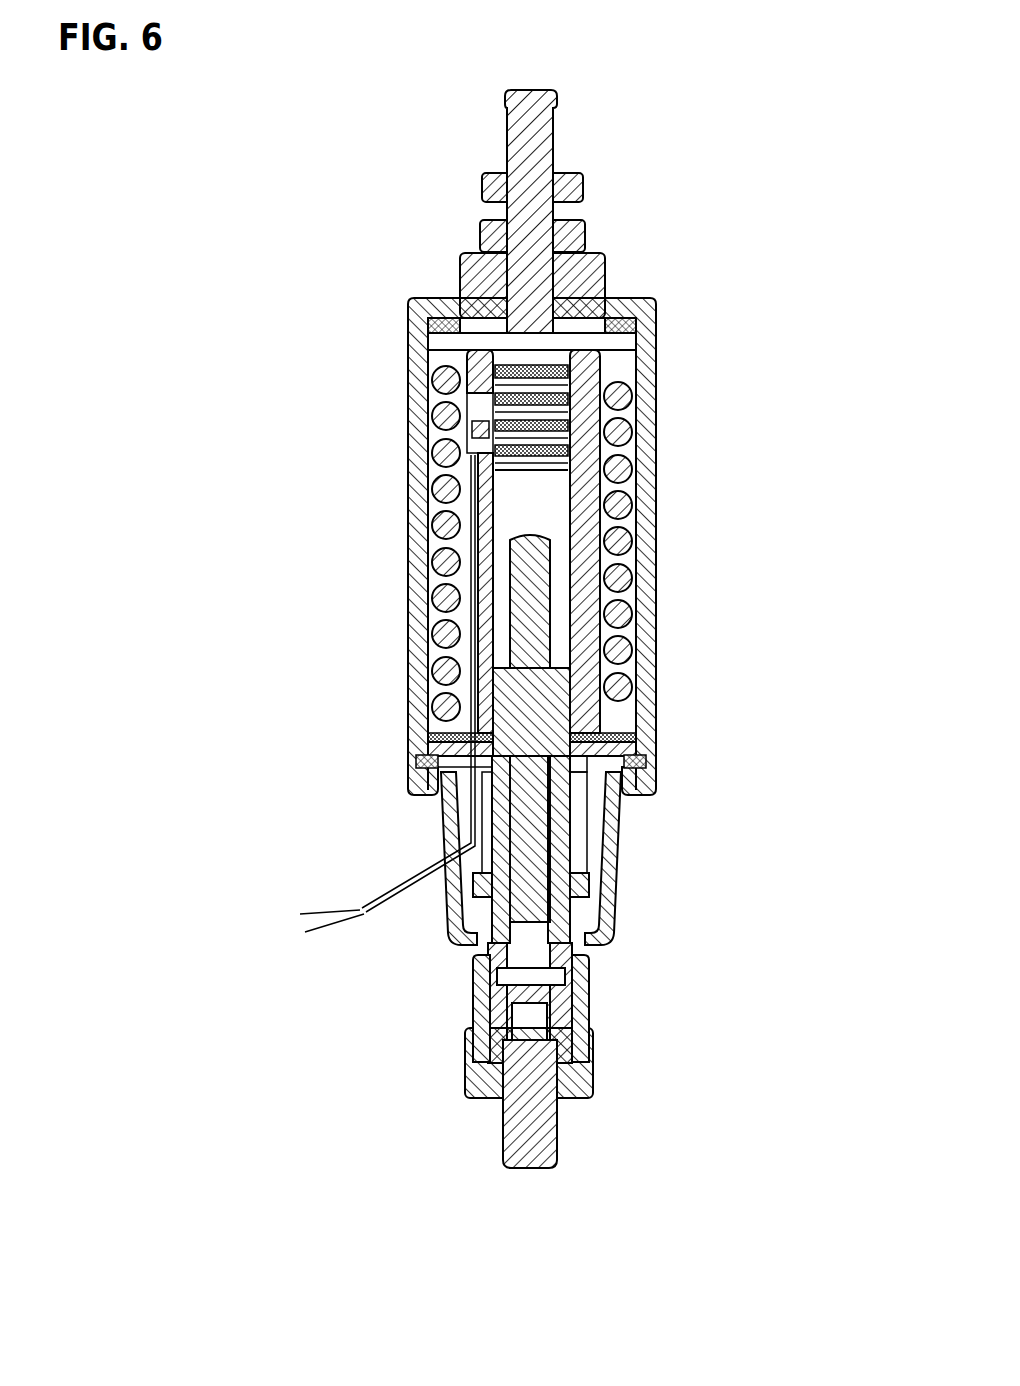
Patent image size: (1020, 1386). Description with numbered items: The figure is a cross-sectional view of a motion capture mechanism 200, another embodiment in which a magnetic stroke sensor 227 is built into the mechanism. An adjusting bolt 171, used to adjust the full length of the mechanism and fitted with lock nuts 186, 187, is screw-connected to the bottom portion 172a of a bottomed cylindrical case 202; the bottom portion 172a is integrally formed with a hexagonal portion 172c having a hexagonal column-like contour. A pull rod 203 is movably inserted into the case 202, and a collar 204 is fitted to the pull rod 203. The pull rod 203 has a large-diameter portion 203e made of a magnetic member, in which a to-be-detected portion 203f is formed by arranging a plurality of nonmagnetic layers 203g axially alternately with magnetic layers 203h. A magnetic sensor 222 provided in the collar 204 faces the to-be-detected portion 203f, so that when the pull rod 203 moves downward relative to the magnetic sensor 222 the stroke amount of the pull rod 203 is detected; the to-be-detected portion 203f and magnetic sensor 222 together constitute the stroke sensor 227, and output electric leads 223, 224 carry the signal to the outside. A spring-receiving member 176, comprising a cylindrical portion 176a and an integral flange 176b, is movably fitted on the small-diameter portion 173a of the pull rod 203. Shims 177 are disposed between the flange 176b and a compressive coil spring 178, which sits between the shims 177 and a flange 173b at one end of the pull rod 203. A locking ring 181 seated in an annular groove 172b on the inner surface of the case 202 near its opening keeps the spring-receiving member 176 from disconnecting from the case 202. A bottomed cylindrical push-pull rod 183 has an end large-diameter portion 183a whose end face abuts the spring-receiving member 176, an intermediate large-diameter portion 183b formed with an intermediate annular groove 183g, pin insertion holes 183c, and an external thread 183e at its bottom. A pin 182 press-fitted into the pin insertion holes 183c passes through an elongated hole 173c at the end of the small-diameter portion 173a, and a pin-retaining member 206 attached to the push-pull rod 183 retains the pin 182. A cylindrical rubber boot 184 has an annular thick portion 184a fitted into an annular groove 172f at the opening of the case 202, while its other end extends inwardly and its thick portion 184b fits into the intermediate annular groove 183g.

The motion capture mechanism 200 is at (312, 150).
The bottomed cylindrical case 202 is at (394, 580).
The pull rod 203 is at (605, 296).
The large-diameter portion 203e is at (523, 390).
The to-be-detected portion 203f is at (517, 348).
The nonmagnetic layers 203g is at (560, 372).
The magnetic layers 203h is at (557, 386).
The collar 204 is at (584, 576).
The pin-retaining member 206 is at (585, 1073).
The adjusting bolt 171 is at (526, 128).
The bottom portion 172a is at (437, 298).
The annular groove 172b is at (627, 800).
The hexagonal portion 172c is at (588, 268).
The annular groove 172f is at (438, 793).
The small-diameter portion 173a is at (532, 608).
The flange 173b is at (622, 341).
The elongated hole 173c is at (575, 983).
The spring-receiving member 176 is at (598, 776).
The cylindrical portion 176a is at (565, 686).
The flange 176b is at (646, 763).
The shims 177 is at (650, 748).
The compressive coil spring 178 is at (606, 646).
The locking ring 181 is at (416, 765).
The pin 182 is at (497, 1000).
The push-pull rod 183 is at (536, 1189).
The end large-diameter portion 183a is at (617, 868).
The intermediate large-diameter portion 183b is at (617, 897).
The pin insertion holes 183c is at (478, 978).
The external thread 183e is at (558, 1130).
The intermediate annular groove 183g is at (567, 955).
The rubber boot 184 is at (590, 905).
The annular thick portion 184a is at (640, 786).
The thick portion 184b is at (450, 938).
The lock nut 186 is at (573, 227).
The lock nut 187 is at (572, 182).
The magnetic sensor 222 is at (471, 428).
The output electric lead 223 is at (385, 888).
The output electric lead 224 is at (383, 910).
The stroke sensor 227 is at (283, 382).